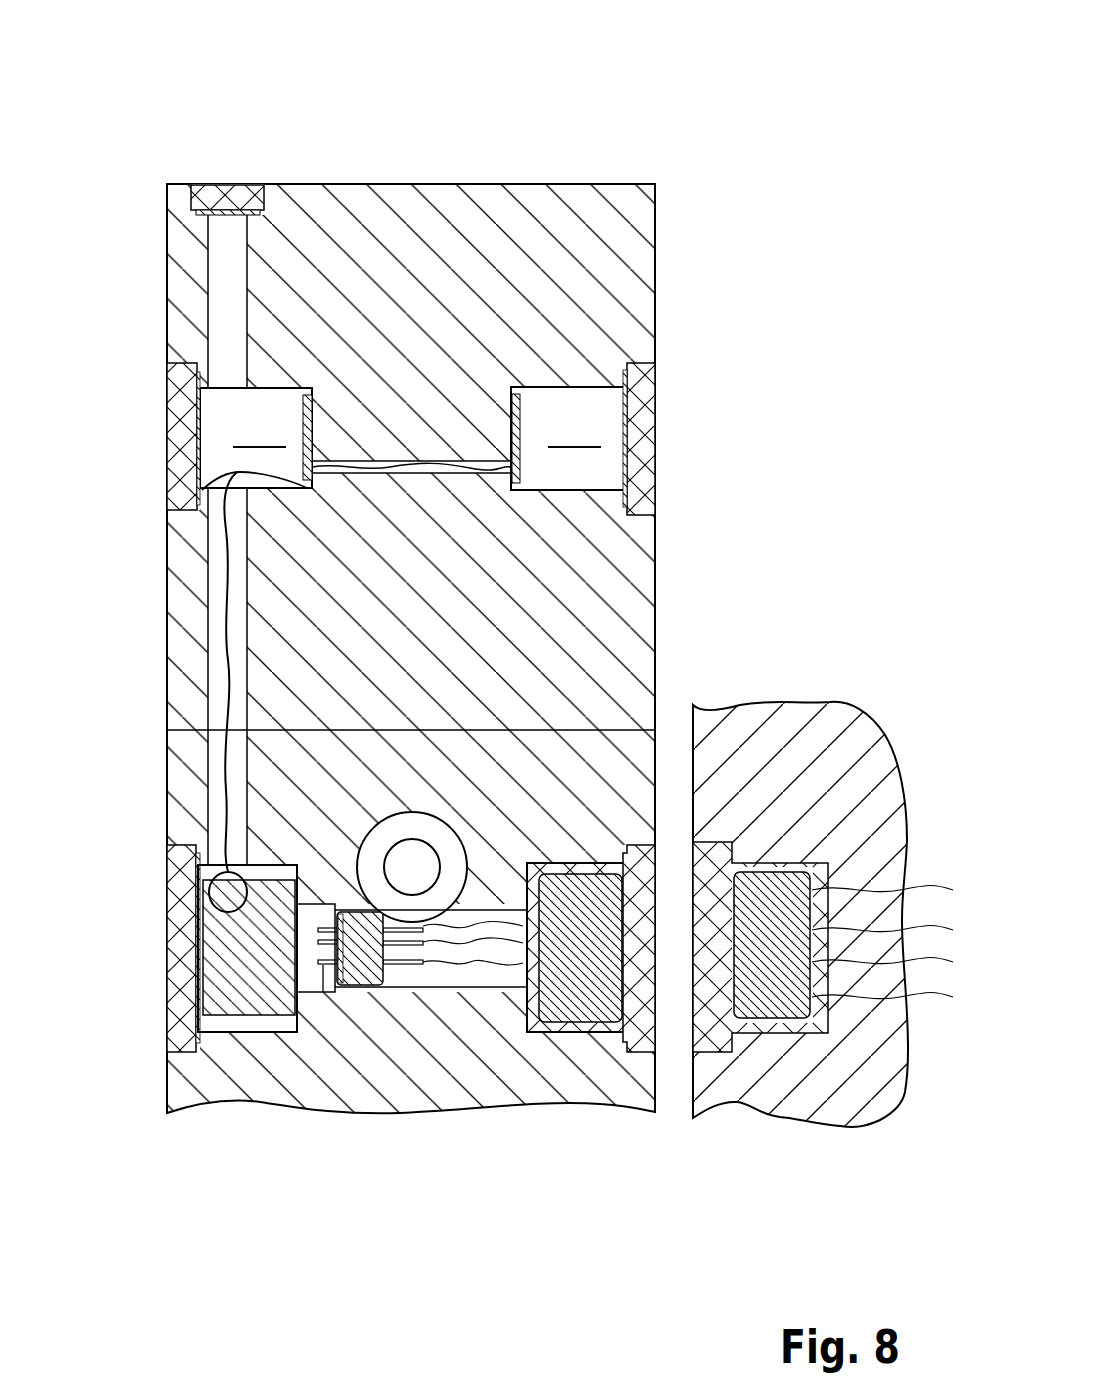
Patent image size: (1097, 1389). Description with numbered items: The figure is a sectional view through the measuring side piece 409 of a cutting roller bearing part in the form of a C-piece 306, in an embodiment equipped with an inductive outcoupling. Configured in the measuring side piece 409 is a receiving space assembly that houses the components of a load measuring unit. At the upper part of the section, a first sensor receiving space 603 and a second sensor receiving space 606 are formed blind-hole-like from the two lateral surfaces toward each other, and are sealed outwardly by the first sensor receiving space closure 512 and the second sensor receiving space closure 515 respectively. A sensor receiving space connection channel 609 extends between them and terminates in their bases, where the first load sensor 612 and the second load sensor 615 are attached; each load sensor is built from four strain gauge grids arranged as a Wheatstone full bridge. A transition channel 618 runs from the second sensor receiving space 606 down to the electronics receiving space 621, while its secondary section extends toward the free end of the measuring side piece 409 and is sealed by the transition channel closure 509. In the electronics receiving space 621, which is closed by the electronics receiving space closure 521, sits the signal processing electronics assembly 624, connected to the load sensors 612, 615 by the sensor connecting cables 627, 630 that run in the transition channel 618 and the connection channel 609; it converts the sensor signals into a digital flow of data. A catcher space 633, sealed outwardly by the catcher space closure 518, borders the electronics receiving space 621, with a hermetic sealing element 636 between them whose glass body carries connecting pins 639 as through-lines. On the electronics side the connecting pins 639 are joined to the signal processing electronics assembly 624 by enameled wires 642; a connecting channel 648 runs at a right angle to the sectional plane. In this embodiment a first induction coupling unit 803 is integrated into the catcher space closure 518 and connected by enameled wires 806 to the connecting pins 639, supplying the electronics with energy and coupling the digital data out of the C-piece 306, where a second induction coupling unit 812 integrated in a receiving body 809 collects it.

The C-piece 306 is at (695, 143).
The measuring side piece 409 is at (582, 565).
The transition channel closure 509 is at (228, 188).
The first sensor receiving space closure 512 is at (655, 460).
The second sensor receiving space closure 515 is at (177, 483).
The catcher space closure 518 is at (638, 1028).
The electronics receiving space closure 521 is at (180, 903).
The first sensor receiving space 603 is at (569, 438).
The second sensor receiving space 606 is at (256, 439).
The sensor receiving space connection channel 609 is at (438, 472).
The first load sensor 612 is at (518, 410).
The second load sensor 615 is at (302, 407).
The transition channel 618 is at (223, 630).
The electronics receiving space 621 is at (250, 1022).
The signal processing electronics assembly 624 is at (242, 983).
The sensor connecting cable 627 is at (363, 467).
The sensor connecting cable 630 is at (227, 709).
The catcher space 633 is at (510, 918).
The sealing element 636 is at (362, 965).
The connecting pins 639 is at (307, 960).
The enameled wires 642 is at (323, 990).
The connecting channel 648 is at (410, 833).
The first induction coupling unit 803 is at (575, 910).
The enameled wires 806 is at (462, 970).
The receiving body 809 is at (767, 1063).
The second induction coupling unit 812 is at (787, 993).